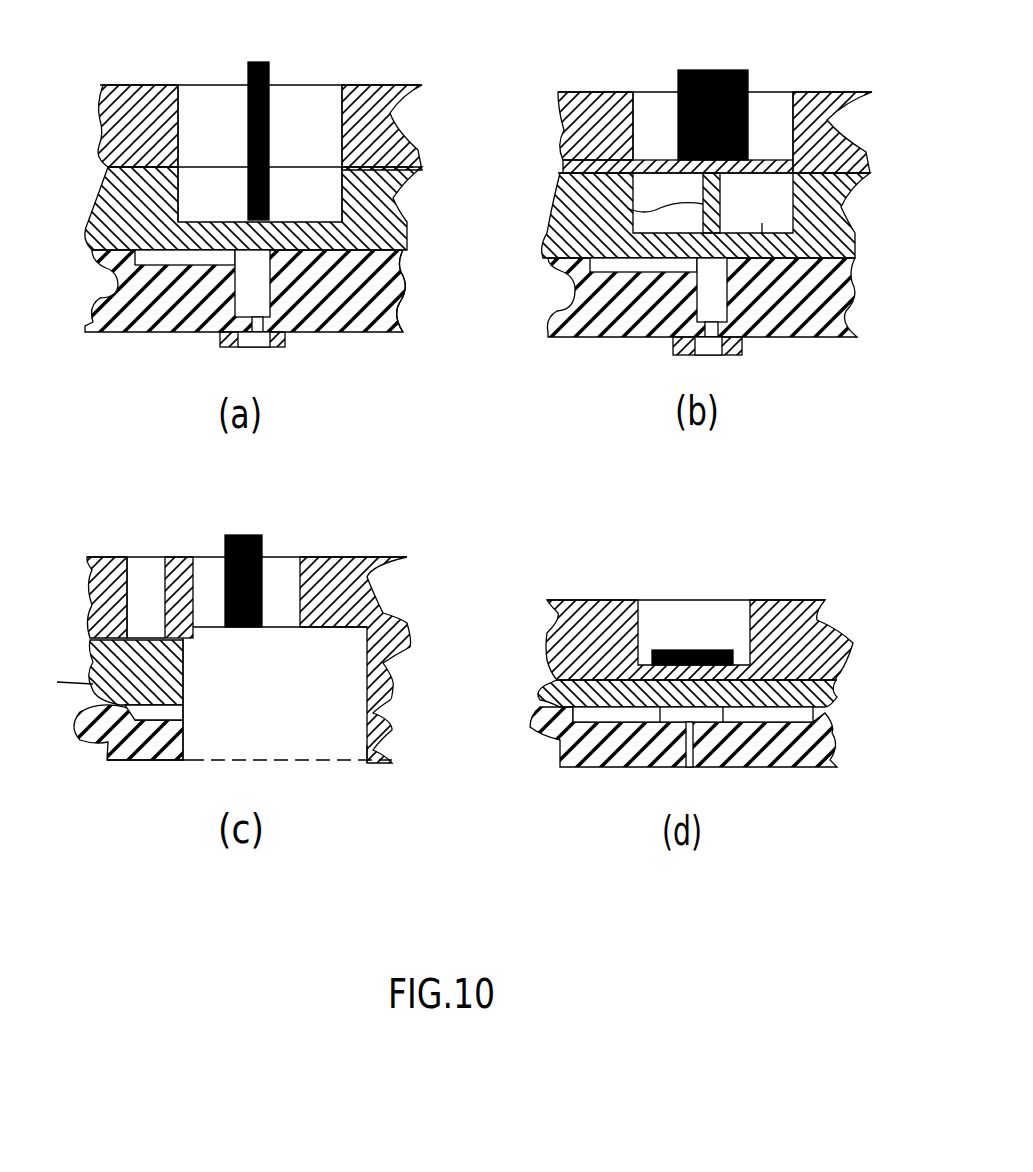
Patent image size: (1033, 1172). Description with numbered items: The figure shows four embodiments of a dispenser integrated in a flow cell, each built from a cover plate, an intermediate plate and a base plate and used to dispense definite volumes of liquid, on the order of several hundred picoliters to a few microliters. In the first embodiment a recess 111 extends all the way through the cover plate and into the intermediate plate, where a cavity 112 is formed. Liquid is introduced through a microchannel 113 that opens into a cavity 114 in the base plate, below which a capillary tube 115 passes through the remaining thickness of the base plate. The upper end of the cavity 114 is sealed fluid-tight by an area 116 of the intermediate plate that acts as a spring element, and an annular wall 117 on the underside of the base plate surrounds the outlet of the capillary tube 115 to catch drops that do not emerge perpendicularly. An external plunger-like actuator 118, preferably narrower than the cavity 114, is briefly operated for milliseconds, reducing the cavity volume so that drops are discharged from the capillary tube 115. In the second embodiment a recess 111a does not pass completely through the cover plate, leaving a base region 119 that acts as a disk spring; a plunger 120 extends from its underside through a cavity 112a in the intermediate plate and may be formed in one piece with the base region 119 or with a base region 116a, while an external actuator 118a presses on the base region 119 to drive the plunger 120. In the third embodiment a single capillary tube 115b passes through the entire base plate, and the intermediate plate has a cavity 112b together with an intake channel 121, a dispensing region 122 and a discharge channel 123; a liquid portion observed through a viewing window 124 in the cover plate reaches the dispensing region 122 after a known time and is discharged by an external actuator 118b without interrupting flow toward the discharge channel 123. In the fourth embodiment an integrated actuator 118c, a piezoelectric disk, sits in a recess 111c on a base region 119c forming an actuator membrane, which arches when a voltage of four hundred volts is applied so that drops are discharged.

The recess 111 is at (298, 140).
The cavity 112 is at (308, 200).
The microchannel 113 is at (114, 290).
The cavity 114 is at (398, 288).
The capillary tube 115 is at (290, 325).
The area of the intermediate plate 116 is at (220, 217).
The annular wall 117 is at (220, 340).
The plunger-like actuator 118 is at (268, 116).
The recess 111a is at (648, 130).
The cavity 112a is at (847, 251).
The base region 116a is at (597, 280).
The external actuator 118a is at (747, 78).
The base region 119 is at (762, 183).
The plunger 120 is at (627, 208).
The cavity 112b is at (377, 674).
The capillary tube 115b is at (197, 760).
The external actuator 118b is at (263, 553).
The intake channel 121 is at (108, 740).
The dispensing region 122 is at (293, 762).
The discharge channel 123 is at (373, 748).
The viewing window 124 is at (138, 590).
The recess 111c is at (648, 630).
The integrated actuator 118c is at (702, 648).
The base region 119c is at (830, 695).